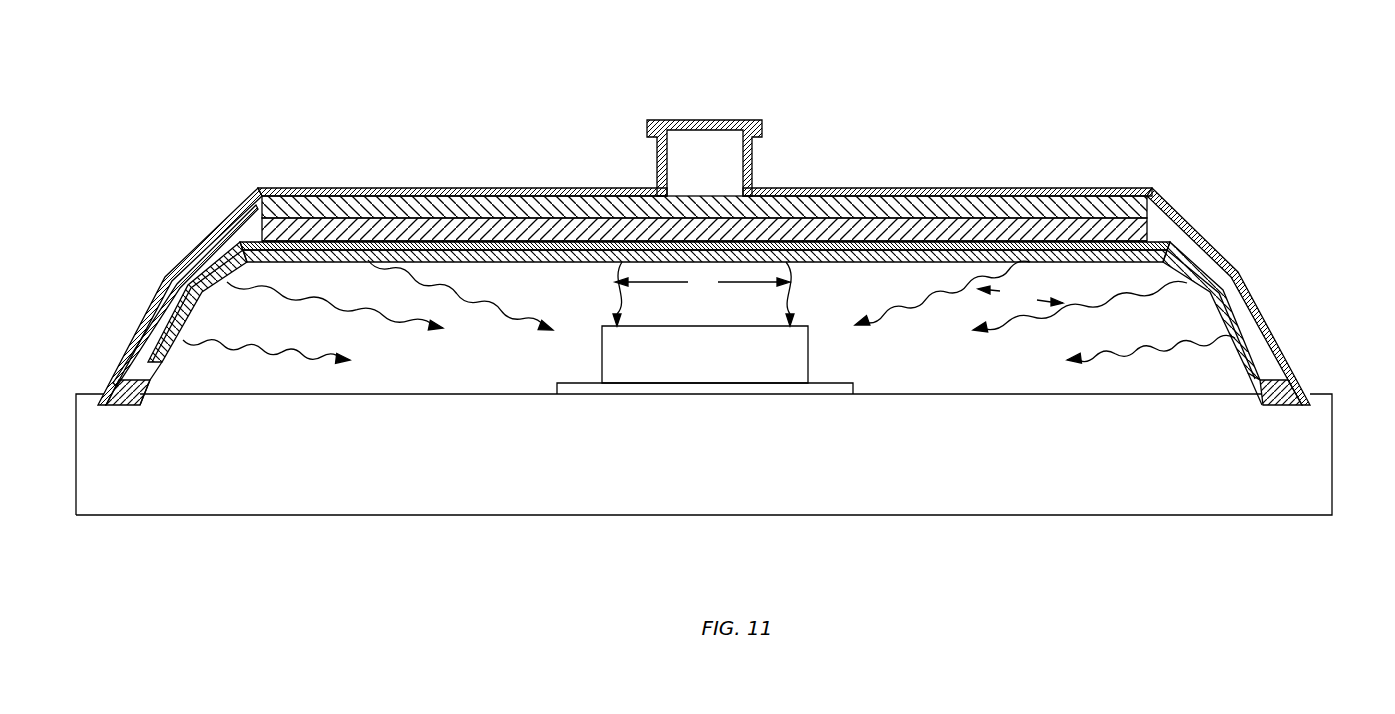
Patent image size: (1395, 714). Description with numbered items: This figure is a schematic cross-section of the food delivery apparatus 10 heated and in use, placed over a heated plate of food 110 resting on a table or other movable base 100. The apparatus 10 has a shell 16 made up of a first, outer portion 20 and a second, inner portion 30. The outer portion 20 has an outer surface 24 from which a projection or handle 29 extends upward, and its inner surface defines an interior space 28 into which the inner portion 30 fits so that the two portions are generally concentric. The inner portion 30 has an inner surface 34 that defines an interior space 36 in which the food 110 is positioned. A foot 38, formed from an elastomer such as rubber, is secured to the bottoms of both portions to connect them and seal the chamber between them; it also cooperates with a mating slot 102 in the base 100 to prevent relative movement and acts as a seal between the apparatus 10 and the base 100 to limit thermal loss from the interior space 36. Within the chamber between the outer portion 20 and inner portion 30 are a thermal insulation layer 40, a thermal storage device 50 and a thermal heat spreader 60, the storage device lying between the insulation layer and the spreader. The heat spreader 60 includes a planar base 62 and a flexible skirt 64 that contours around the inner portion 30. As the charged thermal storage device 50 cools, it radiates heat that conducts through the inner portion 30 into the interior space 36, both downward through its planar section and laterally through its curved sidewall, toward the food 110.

The food delivery apparatus 10 is at (719, 288).
The shell 16 is at (1305, 372).
The outer portion 20 is at (730, 293).
The outer surface 24 is at (845, 188).
The interior space 28 is at (1213, 268).
The handle 29 is at (748, 120).
The inner portion 30 is at (1247, 372).
The inner surface 34 is at (163, 370).
The interior space 36 is at (1193, 327).
The foot 38 is at (112, 400).
The thermal insulation layer 40 is at (498, 207).
The thermal storage device 50 is at (578, 245).
The thermal heat spreader 60 is at (425, 220).
The planar base 62 is at (332, 243).
The flexible skirt 64 is at (223, 260).
The base 100 is at (690, 464).
The mating slot 102 is at (150, 410).
The food 110 is at (690, 364).